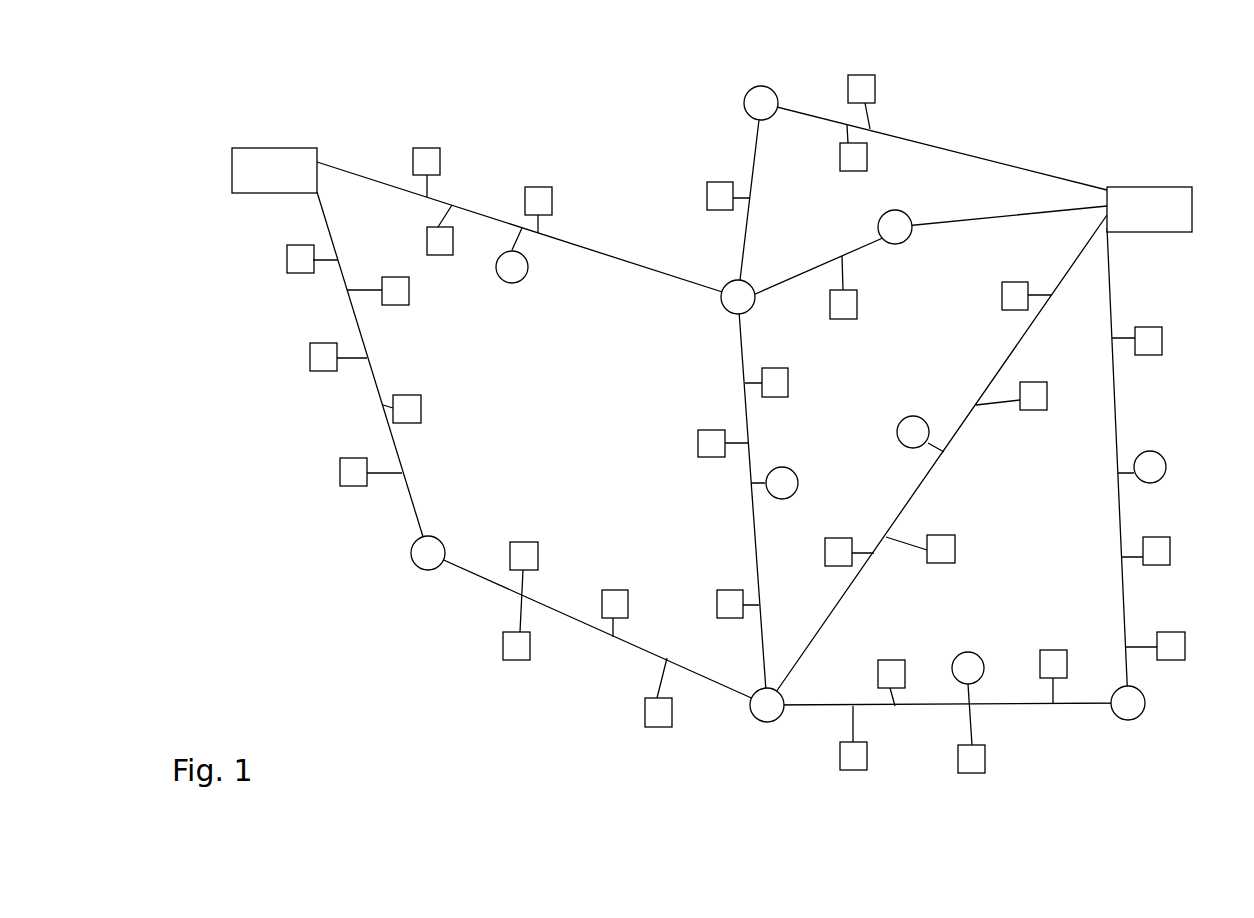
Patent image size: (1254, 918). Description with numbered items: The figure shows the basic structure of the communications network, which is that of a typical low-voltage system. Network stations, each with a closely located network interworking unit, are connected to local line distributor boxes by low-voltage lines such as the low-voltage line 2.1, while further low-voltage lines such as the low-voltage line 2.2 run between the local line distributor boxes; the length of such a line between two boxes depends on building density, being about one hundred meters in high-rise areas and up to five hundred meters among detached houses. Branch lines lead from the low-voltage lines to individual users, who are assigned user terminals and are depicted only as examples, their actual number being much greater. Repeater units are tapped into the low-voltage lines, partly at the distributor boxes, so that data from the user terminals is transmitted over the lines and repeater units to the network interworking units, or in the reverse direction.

The low-voltage line 2.1 is at (405, 532).
The low-voltage line 2.2 is at (473, 592).